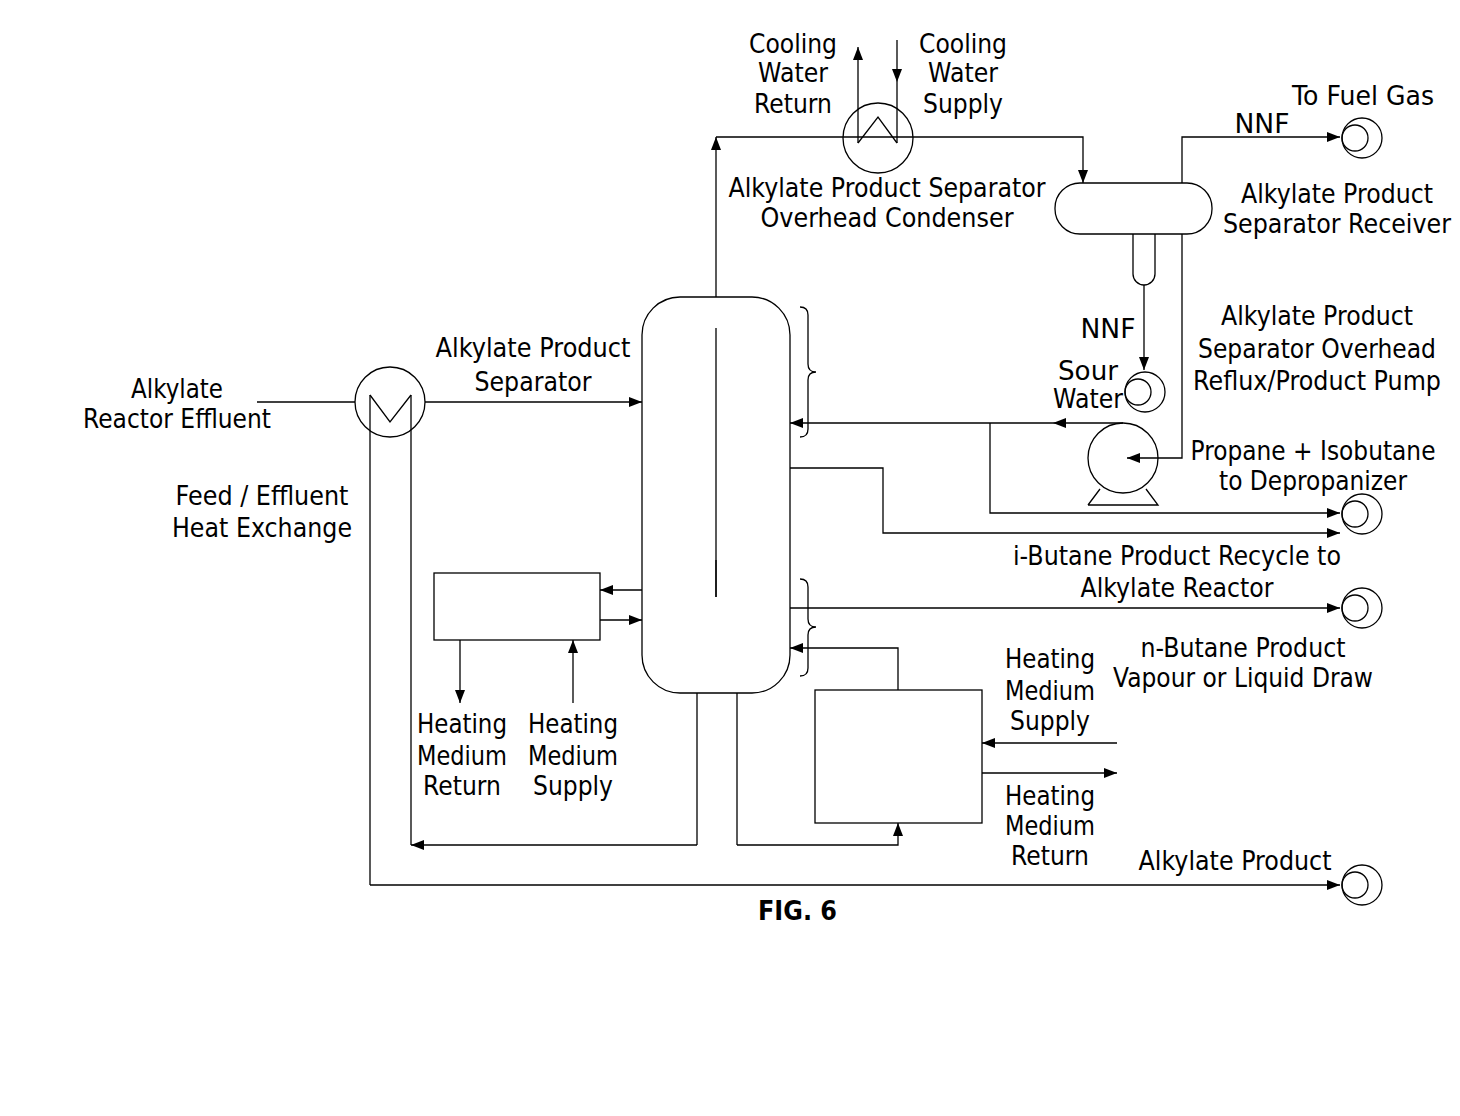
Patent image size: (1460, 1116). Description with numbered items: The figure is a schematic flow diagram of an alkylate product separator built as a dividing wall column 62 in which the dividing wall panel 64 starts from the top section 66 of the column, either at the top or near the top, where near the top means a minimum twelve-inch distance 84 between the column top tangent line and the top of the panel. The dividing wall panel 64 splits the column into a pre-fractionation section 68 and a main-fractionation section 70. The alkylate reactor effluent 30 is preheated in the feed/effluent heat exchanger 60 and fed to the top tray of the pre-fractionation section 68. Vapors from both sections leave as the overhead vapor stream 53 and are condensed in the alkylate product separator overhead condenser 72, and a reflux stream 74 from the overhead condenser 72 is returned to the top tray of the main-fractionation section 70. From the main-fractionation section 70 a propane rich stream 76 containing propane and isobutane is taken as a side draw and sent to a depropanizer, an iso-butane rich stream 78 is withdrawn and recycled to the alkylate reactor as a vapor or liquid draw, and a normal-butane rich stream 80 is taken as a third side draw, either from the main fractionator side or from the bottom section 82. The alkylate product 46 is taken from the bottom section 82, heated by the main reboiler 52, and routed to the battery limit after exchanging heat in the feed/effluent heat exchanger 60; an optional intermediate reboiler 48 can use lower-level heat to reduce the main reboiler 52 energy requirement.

The alkylate reactor effluent 30 is at (310, 400).
The feed/effluent heat exchanger 60 is at (372, 372).
The dividing wall column 62 is at (762, 302).
The distance 84 is at (718, 300).
The dividing wall panel 64 is at (716, 598).
The pre-fractionation section 68 is at (694, 377).
The main-fractionation section 70 is at (766, 377).
The top section 66 is at (827, 372).
The bottom section 82 is at (844, 634).
The overhead vapor stream 53 is at (716, 205).
The alkylate product separator overhead condenser 72 is at (913, 147).
The reflux stream 74 is at (952, 423).
The propane rich stream 76 is at (1073, 513).
The iso-butane rich stream 78 is at (952, 533).
The normal-butane rich stream 80 is at (952, 608).
The main reboiler 52 is at (926, 690).
The intermediate reboiler 48 is at (584, 573).
The alkylate product 46 is at (590, 845).